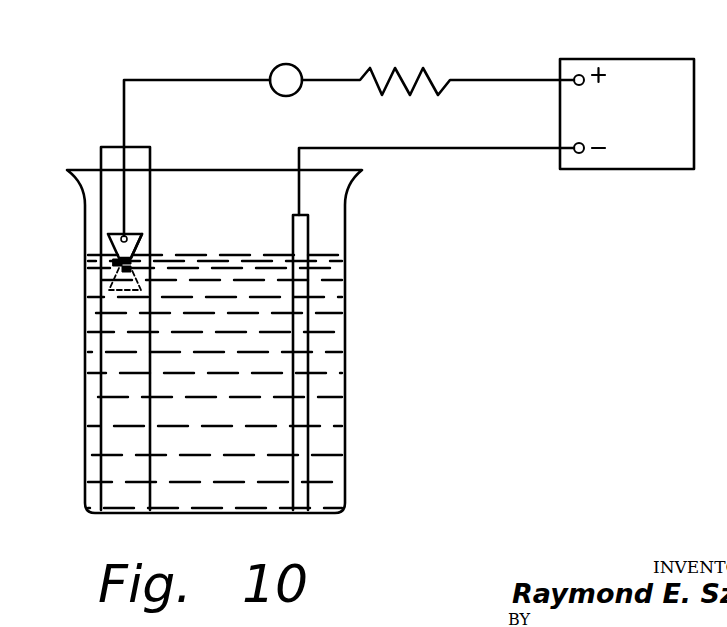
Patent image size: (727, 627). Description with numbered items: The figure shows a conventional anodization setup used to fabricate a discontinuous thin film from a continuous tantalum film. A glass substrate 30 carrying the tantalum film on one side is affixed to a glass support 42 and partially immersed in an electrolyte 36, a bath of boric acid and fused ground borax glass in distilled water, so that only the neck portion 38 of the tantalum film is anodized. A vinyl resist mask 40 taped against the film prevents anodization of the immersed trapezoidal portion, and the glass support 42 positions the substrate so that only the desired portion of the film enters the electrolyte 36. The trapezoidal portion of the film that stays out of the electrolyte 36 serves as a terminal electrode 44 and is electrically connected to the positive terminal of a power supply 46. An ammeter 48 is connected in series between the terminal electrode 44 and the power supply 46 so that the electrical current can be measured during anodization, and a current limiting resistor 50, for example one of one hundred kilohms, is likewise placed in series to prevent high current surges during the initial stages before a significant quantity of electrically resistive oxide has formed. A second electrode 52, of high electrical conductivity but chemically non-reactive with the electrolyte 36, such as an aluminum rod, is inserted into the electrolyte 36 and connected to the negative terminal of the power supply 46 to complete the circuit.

The glass substrate 30 is at (140, 242).
The electrolyte 36 is at (182, 493).
The neck portion 38 is at (115, 263).
The vinyl resist mask 40 is at (108, 287).
The glass support 42 is at (101, 147).
The terminal electrode 44 is at (108, 236).
The power supply 46 is at (613, 59).
The ammeter 48 is at (283, 63).
The current limiting resistor 50 is at (397, 68).
The second electrode 52 is at (300, 384).